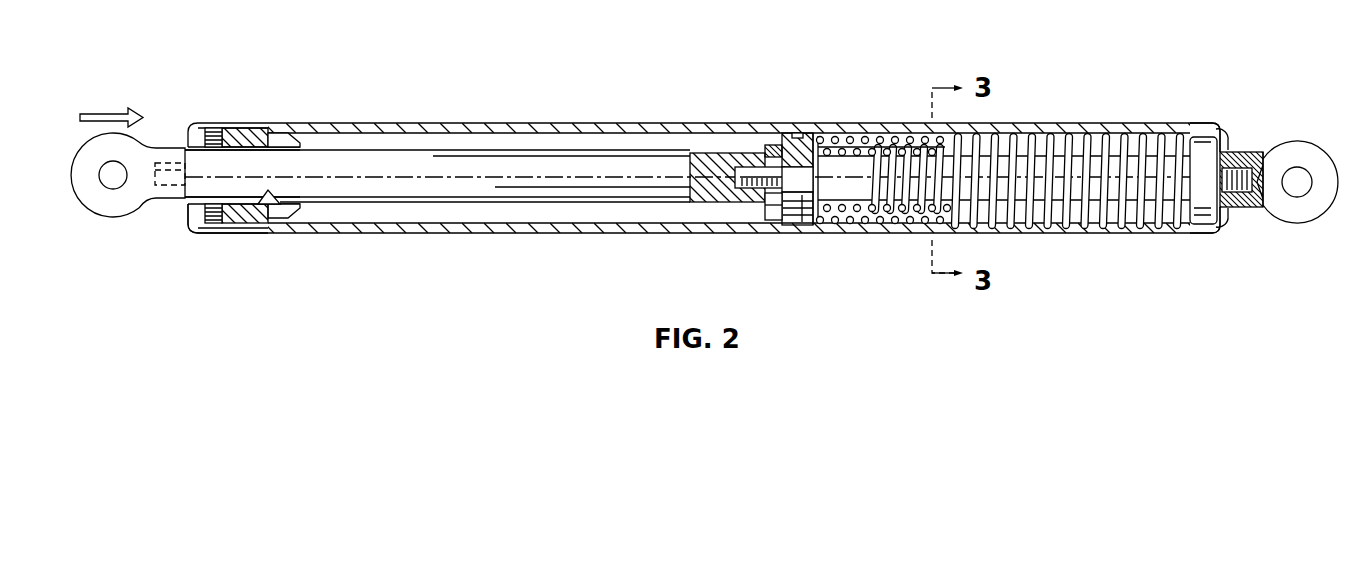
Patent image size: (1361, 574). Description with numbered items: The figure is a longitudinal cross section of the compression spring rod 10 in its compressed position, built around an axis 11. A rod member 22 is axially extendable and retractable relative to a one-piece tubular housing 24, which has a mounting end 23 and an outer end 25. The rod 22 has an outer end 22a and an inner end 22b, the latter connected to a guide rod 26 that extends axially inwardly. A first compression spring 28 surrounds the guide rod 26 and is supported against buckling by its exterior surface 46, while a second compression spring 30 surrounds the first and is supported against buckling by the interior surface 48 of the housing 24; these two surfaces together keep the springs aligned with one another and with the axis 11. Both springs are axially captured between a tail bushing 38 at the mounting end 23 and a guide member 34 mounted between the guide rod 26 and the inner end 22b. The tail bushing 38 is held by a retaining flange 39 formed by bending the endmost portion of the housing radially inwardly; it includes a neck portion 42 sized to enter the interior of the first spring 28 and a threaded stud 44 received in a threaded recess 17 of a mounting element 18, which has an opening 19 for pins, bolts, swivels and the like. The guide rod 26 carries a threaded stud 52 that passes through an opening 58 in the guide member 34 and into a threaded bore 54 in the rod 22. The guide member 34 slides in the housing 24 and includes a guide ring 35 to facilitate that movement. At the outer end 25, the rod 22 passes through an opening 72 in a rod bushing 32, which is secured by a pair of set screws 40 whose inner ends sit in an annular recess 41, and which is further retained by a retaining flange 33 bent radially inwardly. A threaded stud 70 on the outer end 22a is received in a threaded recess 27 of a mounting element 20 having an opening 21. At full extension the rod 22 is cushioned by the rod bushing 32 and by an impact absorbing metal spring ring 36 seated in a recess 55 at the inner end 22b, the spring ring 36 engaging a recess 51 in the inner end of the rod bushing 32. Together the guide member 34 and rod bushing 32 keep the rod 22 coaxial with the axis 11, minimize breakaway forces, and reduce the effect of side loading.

The compression spring rod 10 is at (702, 53).
The axis 11 is at (453, 177).
The threaded recess 17 is at (1268, 207).
The mounting element 18 is at (1309, 128).
The opening 19 is at (1300, 187).
The mounting element 20 is at (112, 218).
The opening 21 is at (107, 177).
The rod member 22 is at (388, 140).
The outer end 22a is at (203, 157).
The inner end 22b is at (775, 165).
The mounting end 23 is at (1205, 128).
The tubular housing 24 is at (574, 114).
The outer end 25 is at (236, 127).
The guide rod 26 is at (864, 141).
The threaded recess 27 is at (163, 188).
The first compression spring 28 is at (920, 162).
The second compression spring 30 is at (1017, 147).
The rod bushing 32 is at (242, 234).
The retaining flange 33 is at (192, 221).
The guide member 34 is at (815, 235).
The guide ring 35 is at (797, 135).
The spring ring 36 is at (772, 208).
The tail bushing 38 is at (1202, 239).
The retaining flange 39 is at (1225, 132).
The set screws 40 is at (224, 126).
The annular recess 41 is at (220, 220).
The neck portion 42 is at (1158, 213).
The threaded stud 44 is at (1235, 200).
The exterior surface 46 is at (845, 144).
The interior surface 48 is at (628, 137).
The recess 51 is at (270, 141).
The threaded stud 52 is at (750, 188).
The threaded bore 54 is at (720, 197).
The recess 55 is at (773, 143).
The opening 58 is at (807, 173).
The threaded stud 70 is at (172, 172).
The opening 72 is at (268, 190).